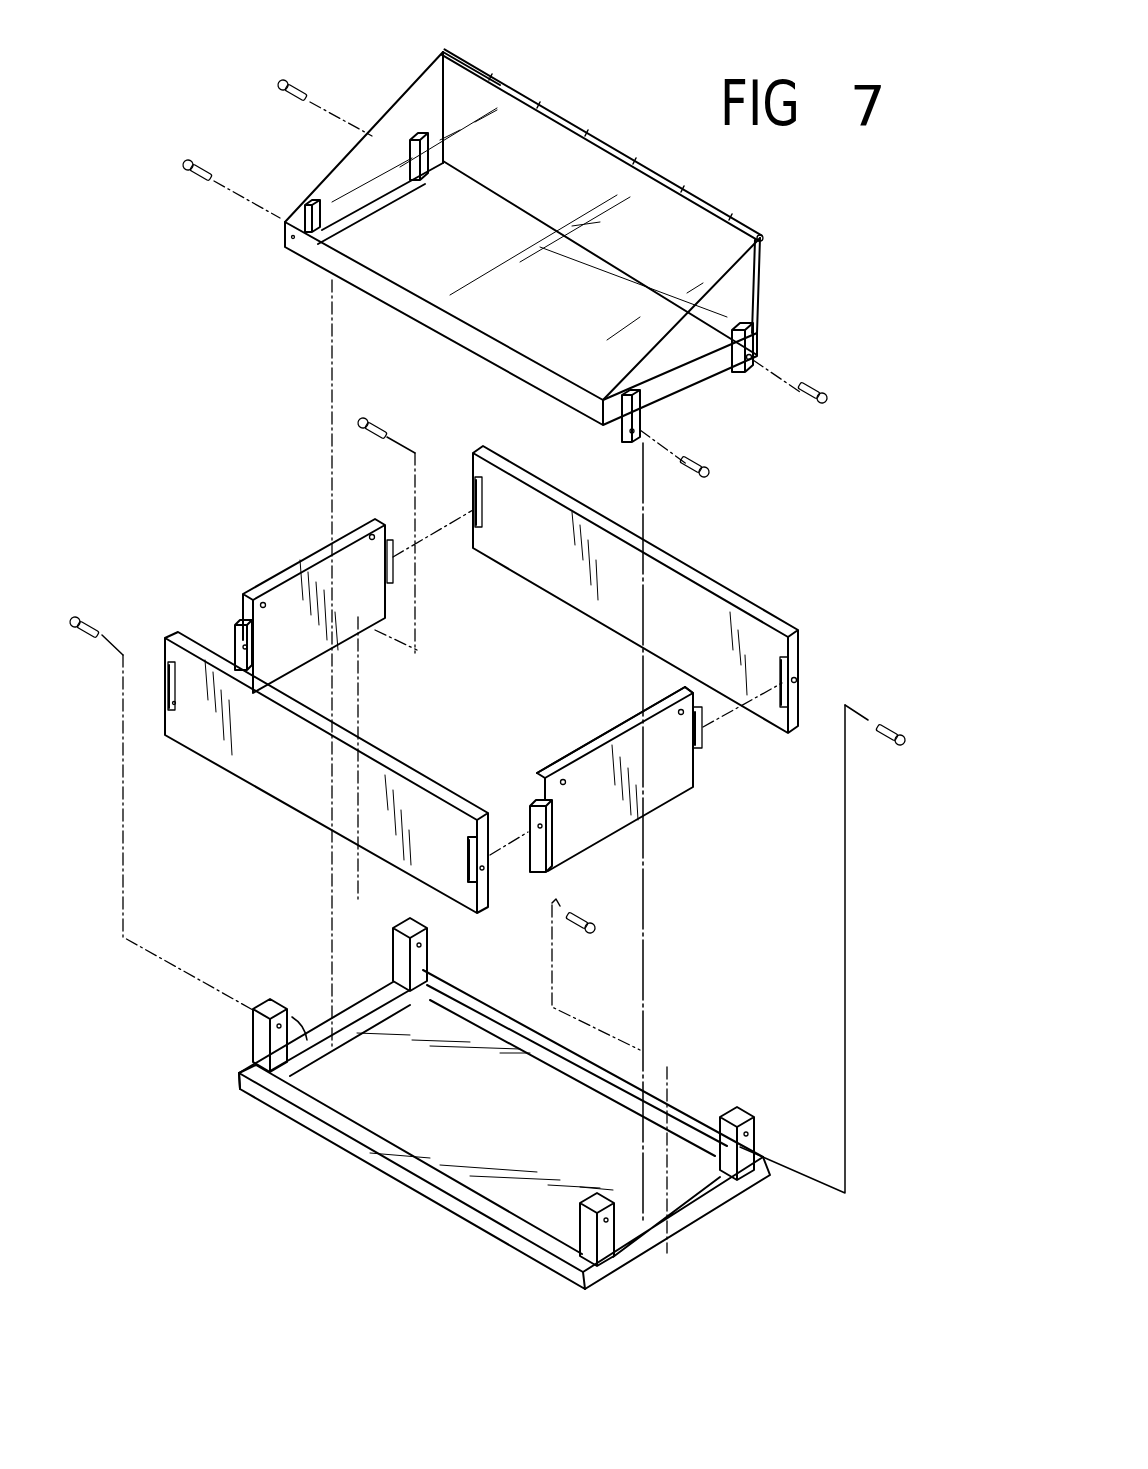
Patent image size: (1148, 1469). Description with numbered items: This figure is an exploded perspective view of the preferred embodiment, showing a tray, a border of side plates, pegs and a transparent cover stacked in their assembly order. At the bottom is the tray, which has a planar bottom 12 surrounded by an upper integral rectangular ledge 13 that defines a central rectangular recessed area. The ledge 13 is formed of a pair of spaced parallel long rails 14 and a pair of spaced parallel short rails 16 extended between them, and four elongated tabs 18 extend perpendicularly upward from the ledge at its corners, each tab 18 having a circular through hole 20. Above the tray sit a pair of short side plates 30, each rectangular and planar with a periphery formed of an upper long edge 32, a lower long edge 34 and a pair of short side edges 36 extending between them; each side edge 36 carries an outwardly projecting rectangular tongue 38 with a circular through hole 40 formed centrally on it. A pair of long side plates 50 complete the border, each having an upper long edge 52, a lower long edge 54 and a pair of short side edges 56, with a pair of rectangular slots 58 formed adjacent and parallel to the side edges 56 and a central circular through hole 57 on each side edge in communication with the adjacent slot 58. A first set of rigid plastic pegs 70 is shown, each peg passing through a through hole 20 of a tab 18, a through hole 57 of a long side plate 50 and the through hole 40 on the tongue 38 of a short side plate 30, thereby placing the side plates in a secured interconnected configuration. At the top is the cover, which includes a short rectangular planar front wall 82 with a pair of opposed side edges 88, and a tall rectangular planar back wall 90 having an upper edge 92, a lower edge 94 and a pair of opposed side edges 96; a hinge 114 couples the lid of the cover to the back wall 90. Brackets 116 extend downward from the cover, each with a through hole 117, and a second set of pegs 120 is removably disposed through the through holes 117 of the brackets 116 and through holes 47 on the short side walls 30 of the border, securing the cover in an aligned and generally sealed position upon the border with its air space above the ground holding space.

The planar bottom 12 is at (488, 1128).
The rectangular ledge 13 is at (360, 1133).
The long rails 14 is at (613, 1077).
The short rails 16 is at (292, 1017).
The tab 18 is at (740, 1148).
The through hole 20 is at (257, 1042).
The short side plate 30 is at (667, 785).
The upper long edge 32 is at (610, 755).
The lower long edge 34 is at (605, 843).
The short side edges 36 is at (543, 788).
The rectangular tongue 38 is at (700, 745).
The through hole 40 is at (535, 870).
The through hole 47 is at (668, 697).
The long side plate 50 is at (712, 613).
The upper long edge 52 is at (373, 753).
The lower long edge 54 is at (270, 797).
The short side edges 56 is at (168, 707).
The through hole 57 is at (483, 882).
The rectangular slot 58 is at (167, 733).
The rigid plastic peg 70 is at (903, 728).
The front wall 82 is at (455, 340).
The side edges 88 is at (285, 222).
The back wall 90 is at (683, 224).
The upper edge 92 is at (593, 132).
The lower edge 94 is at (637, 280).
The side edges 96 is at (443, 92).
The hinge 114 is at (515, 88).
The bracket 116 is at (640, 420).
The through hole 117 is at (752, 357).
The peg 120 is at (827, 387).